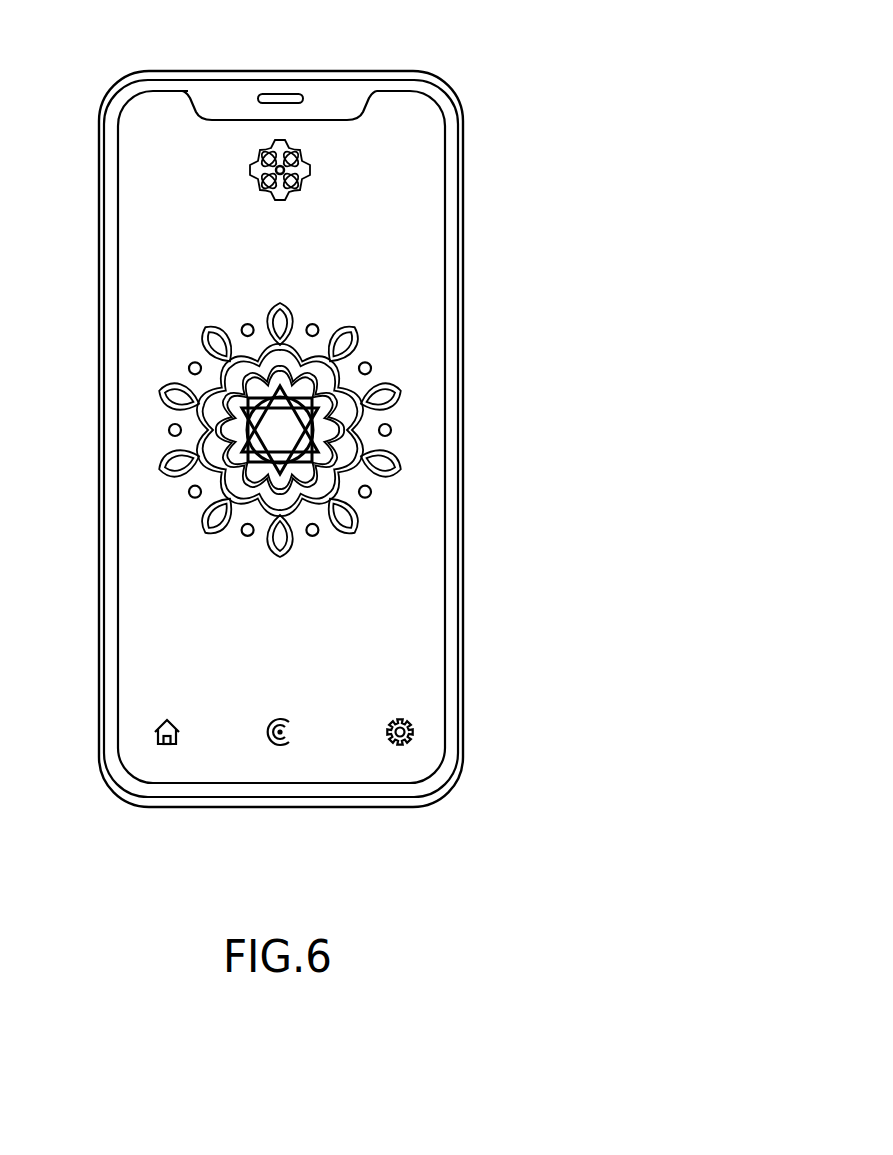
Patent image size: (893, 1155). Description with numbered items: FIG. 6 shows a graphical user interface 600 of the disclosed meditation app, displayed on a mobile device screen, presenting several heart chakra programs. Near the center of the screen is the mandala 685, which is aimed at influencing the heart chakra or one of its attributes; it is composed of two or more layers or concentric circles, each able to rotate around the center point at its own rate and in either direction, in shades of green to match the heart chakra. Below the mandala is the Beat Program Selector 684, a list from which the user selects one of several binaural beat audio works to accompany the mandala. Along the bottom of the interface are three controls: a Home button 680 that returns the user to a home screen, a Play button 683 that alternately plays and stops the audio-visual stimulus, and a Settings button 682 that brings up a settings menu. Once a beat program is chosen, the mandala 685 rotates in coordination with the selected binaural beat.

The graphical user interface 600 is at (448, 152).
The Home button 680 is at (162, 745).
The Settings button 682 is at (410, 743).
The Play button 683 is at (277, 745).
The Beat Program Selector 684 is at (368, 630).
The mandala 685 is at (383, 455).